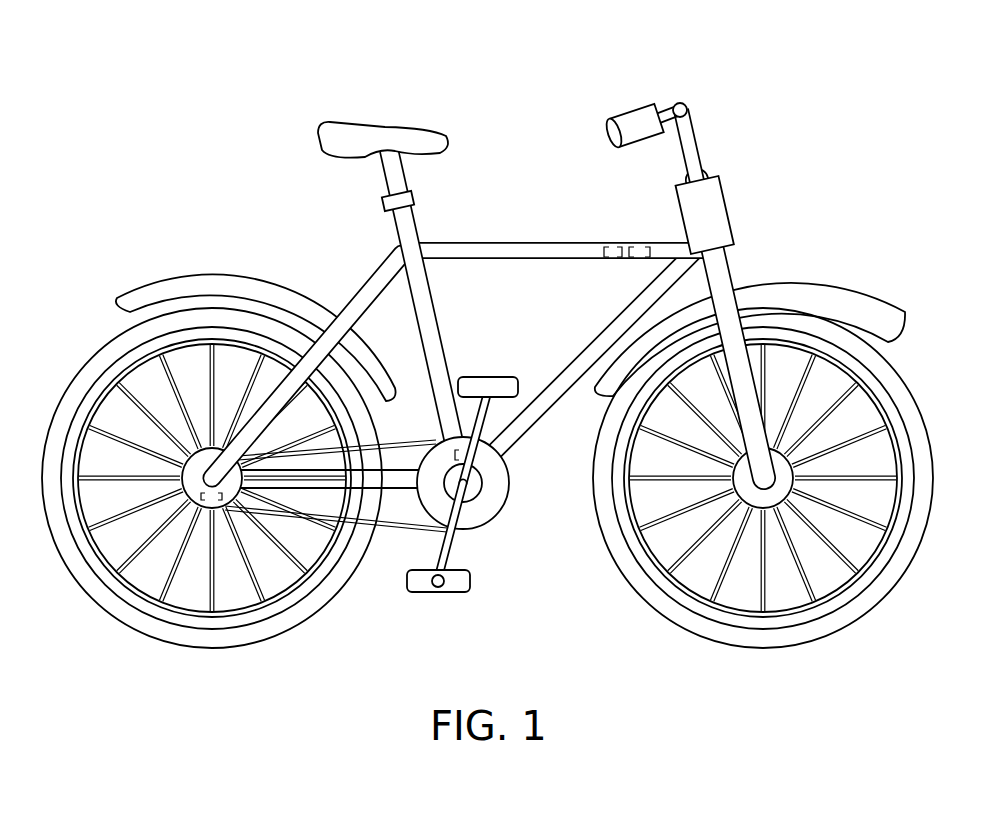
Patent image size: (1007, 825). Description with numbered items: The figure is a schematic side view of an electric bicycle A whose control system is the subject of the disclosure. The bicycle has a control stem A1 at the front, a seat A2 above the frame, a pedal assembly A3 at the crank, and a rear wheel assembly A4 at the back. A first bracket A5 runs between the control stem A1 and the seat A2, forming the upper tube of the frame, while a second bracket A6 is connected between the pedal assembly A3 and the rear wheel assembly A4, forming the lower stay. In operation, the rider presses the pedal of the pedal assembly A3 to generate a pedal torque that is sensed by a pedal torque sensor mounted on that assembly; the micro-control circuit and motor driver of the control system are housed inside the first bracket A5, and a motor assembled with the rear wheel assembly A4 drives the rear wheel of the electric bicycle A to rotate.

The electric bicycle A is at (485, 340).
The control stem A1 is at (681, 102).
The seat A2 is at (380, 133).
The pedal assembly A3 is at (490, 503).
The rear wheel assembly A4 is at (190, 464).
The first bracket A5 is at (541, 246).
The second bracket A6 is at (397, 483).